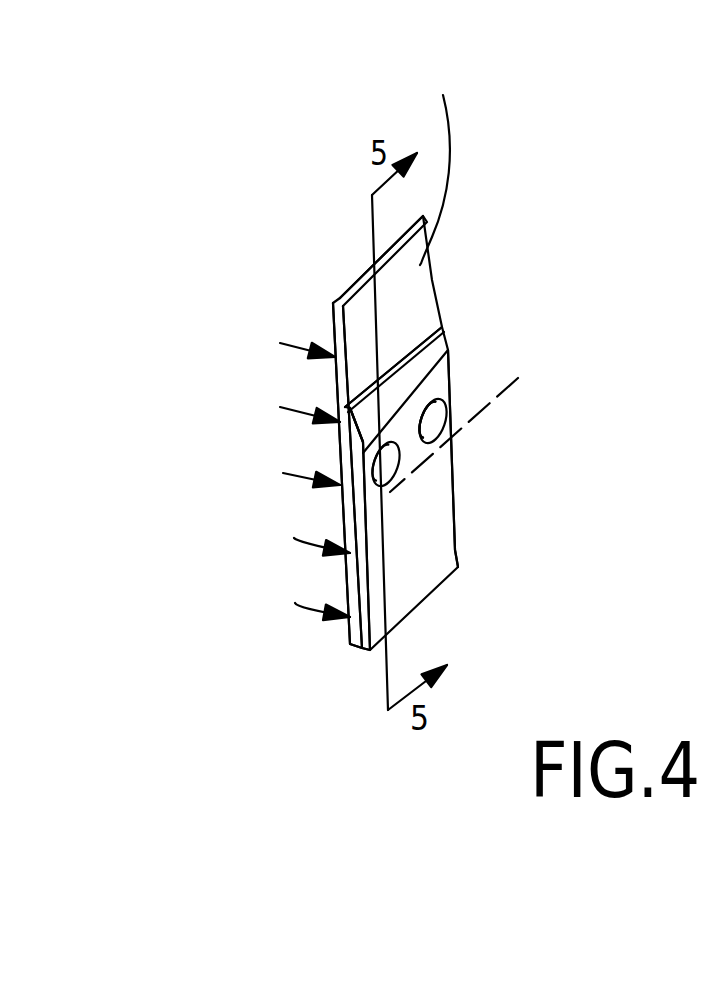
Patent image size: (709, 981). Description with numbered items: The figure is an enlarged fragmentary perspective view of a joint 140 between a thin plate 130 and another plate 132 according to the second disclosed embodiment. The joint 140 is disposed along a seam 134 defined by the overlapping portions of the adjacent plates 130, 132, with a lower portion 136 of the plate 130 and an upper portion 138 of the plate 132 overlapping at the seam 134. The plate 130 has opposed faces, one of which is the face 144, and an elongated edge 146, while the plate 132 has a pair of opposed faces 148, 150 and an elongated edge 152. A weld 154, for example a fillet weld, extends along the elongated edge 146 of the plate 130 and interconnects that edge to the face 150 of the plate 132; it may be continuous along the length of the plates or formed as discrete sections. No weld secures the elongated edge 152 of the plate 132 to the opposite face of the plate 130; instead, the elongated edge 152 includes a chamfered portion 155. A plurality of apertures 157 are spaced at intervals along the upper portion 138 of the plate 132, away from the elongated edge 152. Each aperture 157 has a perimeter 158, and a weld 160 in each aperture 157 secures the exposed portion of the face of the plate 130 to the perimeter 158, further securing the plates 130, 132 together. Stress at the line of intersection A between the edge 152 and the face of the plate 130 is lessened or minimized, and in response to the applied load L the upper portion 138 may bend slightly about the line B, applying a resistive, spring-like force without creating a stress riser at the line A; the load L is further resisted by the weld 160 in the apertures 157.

The plate 130 is at (332, 312).
The plate 132 is at (442, 552).
The seam 134 is at (340, 451).
The lower portion 136 is at (340, 442).
The upper portion 138 is at (450, 377).
The joint 140 is at (493, 207).
The face 144 is at (352, 283).
The elongated edge 146 is at (343, 510).
The face 148 is at (440, 522).
The face 150 is at (352, 582).
The elongated edge 152 is at (430, 303).
The weld 154 is at (343, 513).
The chamfered portion 155 is at (452, 345).
The apertures 157 is at (438, 420).
The perimeter 158 is at (450, 395).
The weld 160 is at (440, 433).
The line of intersection A is at (432, 310).
The line B is at (518, 378).
The load L is at (293, 540).